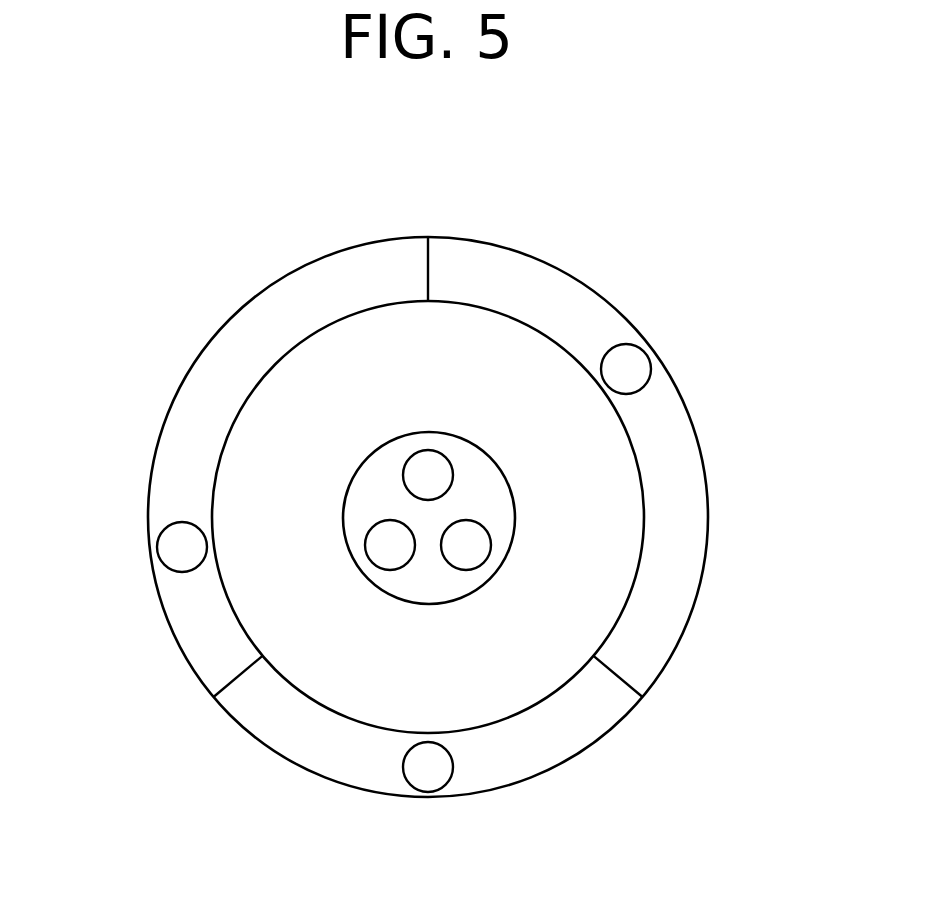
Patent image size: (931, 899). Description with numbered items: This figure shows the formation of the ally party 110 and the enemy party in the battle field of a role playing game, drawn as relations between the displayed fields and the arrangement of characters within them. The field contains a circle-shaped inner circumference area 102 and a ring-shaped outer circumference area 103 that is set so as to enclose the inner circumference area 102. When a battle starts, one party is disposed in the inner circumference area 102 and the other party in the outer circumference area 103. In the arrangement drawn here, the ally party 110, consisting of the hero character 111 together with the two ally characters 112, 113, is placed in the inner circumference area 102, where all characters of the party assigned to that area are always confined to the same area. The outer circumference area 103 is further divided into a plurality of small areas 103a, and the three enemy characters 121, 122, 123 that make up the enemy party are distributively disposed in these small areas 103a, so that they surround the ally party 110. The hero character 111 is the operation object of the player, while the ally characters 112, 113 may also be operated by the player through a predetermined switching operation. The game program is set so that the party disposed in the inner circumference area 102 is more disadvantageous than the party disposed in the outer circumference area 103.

The inner circumference area 102 is at (530, 470).
The outer circumference area 103 is at (742, 512).
The small areas 103a is at (354, 257).
The ally party 110 is at (358, 491).
The hero character 111 is at (385, 565).
The ally character 112 is at (428, 455).
The ally character 113 is at (472, 565).
The enemy character 121 is at (163, 550).
The enemy character 122 is at (643, 366).
The enemy character 123 is at (428, 783).